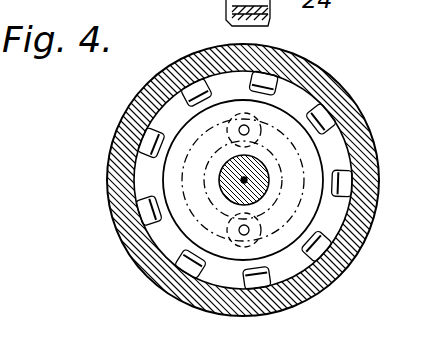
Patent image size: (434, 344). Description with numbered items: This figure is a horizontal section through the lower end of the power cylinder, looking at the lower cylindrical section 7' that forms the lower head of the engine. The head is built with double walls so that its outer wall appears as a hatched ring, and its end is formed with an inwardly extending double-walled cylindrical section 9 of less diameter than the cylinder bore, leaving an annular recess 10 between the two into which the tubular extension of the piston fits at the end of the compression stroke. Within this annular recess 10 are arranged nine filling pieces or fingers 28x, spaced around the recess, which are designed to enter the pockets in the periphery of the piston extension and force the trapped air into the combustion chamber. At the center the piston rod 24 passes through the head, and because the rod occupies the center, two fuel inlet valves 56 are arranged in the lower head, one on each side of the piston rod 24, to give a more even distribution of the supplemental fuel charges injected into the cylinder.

The lower cylindrical section 7' is at (232, 180).
The annular recess 10 is at (324, 147).
The inwardly extending double-walled cylindrical section 9 is at (243, 180).
The piston rod 24 is at (232, 179).
The fuel inlet valve 56 is at (249, 128).
The filling pieces or fingers 28x is at (319, 113).